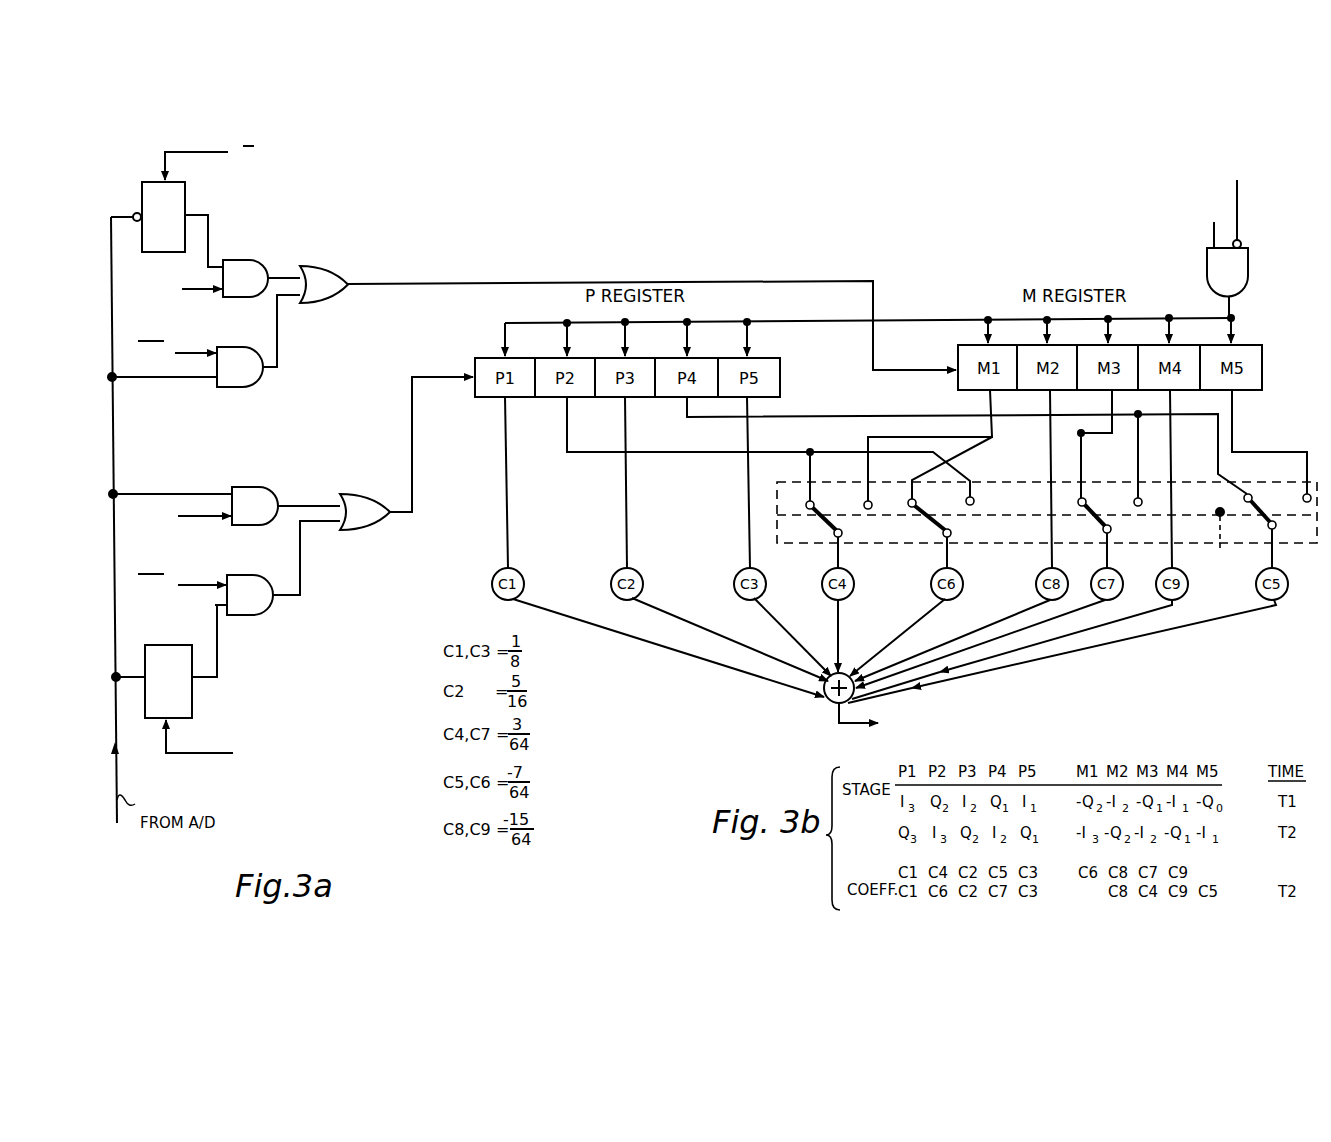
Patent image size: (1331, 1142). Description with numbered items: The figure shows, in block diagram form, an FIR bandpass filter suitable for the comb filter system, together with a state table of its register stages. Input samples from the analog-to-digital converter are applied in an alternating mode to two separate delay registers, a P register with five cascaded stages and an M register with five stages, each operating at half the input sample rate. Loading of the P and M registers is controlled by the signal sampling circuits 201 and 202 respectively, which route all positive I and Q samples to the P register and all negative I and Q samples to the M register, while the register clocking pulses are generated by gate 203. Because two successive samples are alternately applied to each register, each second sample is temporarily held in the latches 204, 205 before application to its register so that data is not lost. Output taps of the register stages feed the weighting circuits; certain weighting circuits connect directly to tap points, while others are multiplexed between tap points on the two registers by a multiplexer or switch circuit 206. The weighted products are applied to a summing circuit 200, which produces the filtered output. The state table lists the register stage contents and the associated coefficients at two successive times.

The summing circuit 200 is at (828, 703).
The signal sampling circuit 201 is at (263, 561).
The signal sampling circuit 202 is at (256, 333).
The gate 203 is at (1248, 268).
The latch 204 is at (193, 703).
The latch 205 is at (190, 193).
The multiplexer or switch circuit 206 is at (1037, 507).